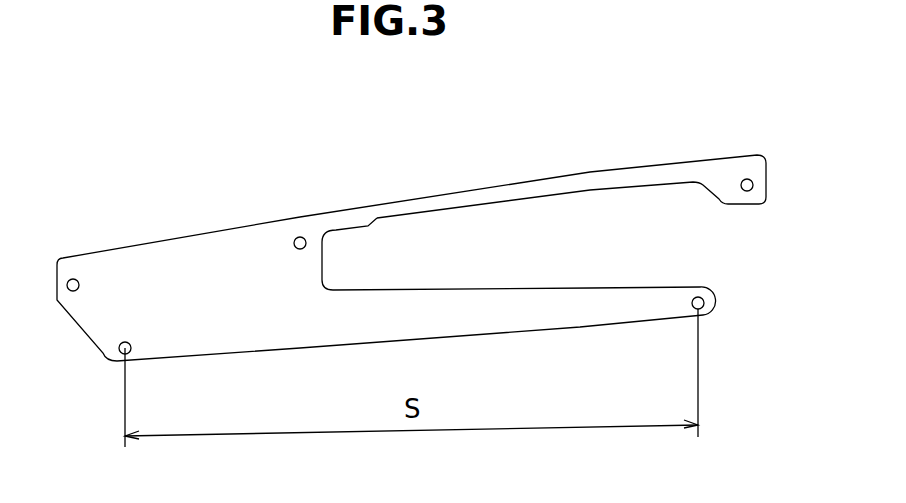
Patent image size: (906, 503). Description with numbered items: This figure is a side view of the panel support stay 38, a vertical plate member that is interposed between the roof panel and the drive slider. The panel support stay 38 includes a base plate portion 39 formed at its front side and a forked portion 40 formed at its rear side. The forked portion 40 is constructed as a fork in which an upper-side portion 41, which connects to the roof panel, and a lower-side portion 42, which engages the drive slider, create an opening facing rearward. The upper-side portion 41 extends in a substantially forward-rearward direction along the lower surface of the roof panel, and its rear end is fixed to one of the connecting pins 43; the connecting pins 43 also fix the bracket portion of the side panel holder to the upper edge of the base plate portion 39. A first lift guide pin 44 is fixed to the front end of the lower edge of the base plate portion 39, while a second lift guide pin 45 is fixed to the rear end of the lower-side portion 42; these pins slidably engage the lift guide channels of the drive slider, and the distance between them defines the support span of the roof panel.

The panel support stay 38 is at (119, 217).
The base plate portion 39 is at (197, 265).
The forked portion 40 is at (461, 174).
The upper-side portion 41 is at (597, 182).
The lower-side portion 42 is at (532, 315).
The connecting pins 43 is at (71, 278).
The first lift guide pin 44 is at (118, 348).
The second lift guide pin 45 is at (708, 303).